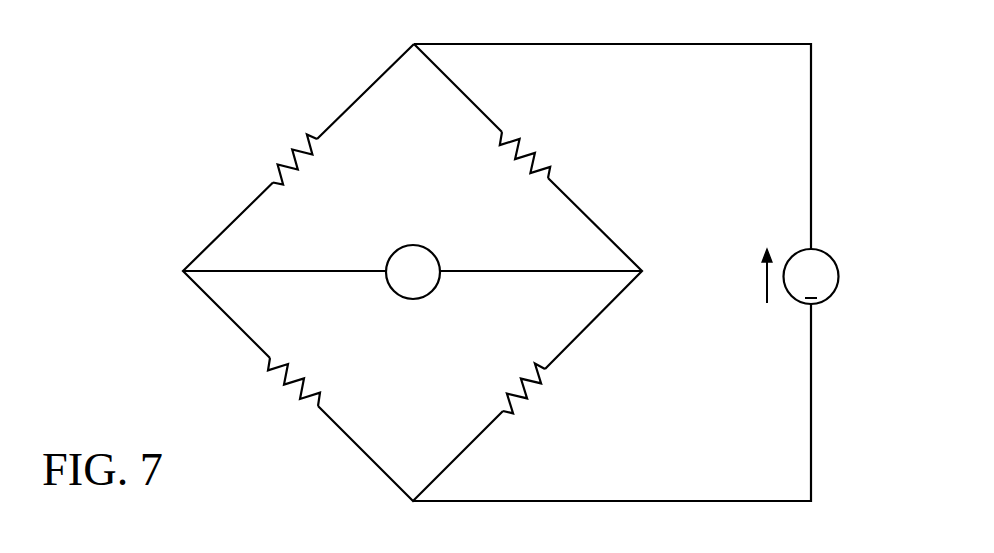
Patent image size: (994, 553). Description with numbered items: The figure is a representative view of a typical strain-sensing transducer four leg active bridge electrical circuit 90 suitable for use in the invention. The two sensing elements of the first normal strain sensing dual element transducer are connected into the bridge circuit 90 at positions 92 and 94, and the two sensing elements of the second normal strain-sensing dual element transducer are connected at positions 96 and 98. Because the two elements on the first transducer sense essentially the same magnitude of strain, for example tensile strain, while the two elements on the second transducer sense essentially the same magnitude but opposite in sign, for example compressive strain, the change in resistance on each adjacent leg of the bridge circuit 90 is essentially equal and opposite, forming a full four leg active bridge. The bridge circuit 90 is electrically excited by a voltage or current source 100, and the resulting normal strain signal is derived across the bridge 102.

The four leg active bridge circuit 90 is at (270, 72).
The bridge position 92 is at (280, 157).
The bridge position 94 is at (537, 395).
The bridge position 96 is at (530, 139).
The bridge position 98 is at (290, 395).
The voltage or current source 100 is at (822, 250).
The bridge output 102 is at (418, 244).